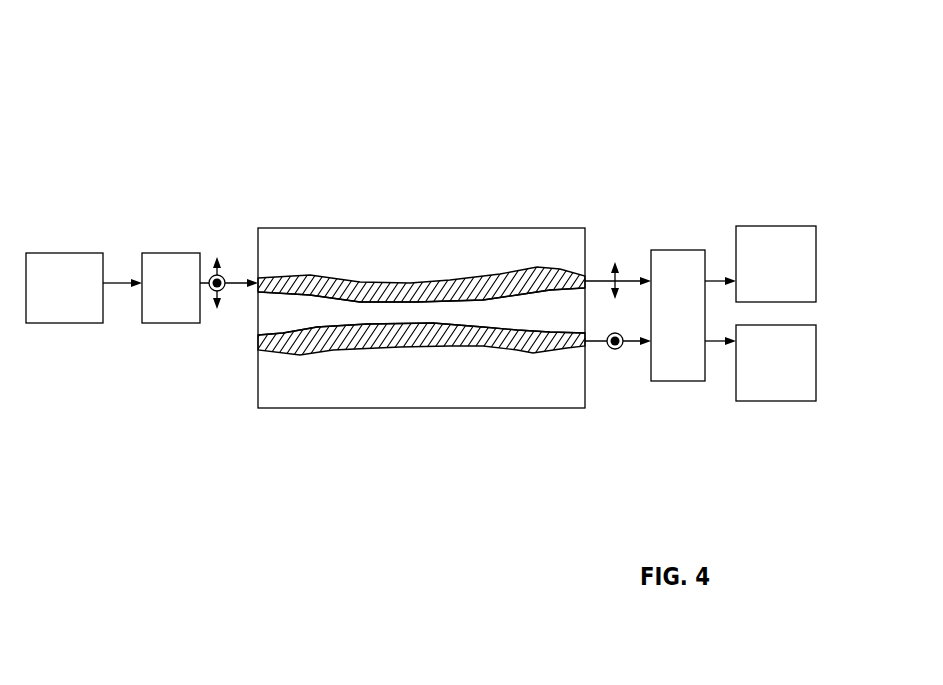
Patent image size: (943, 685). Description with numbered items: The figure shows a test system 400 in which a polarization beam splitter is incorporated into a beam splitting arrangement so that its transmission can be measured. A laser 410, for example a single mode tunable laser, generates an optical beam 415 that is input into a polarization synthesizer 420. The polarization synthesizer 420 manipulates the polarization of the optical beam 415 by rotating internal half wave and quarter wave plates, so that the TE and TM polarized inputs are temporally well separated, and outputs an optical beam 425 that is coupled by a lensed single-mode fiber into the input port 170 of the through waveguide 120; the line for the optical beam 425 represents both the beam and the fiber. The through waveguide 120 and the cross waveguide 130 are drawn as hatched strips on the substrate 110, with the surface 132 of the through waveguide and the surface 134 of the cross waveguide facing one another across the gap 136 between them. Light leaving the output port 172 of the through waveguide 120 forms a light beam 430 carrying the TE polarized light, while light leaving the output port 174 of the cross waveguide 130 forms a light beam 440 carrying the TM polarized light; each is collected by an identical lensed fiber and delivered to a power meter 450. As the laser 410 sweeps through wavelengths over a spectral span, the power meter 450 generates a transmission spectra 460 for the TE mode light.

The test system 400 is at (657, 56).
The laser 410 is at (64, 288).
The optical beam 415 is at (118, 283).
The polarization synthesizer 420 is at (171, 288).
The input port 170 is at (256, 281).
The optical beam 425 is at (242, 283).
The substrate 110 is at (412, 228).
The through waveguide 120 is at (292, 275).
The cross waveguide 130 is at (292, 354).
The first waveguide surface 132 is at (370, 302).
The second waveguide surface 134 is at (482, 313).
The gap between waveguides 136 is at (422, 314).
The output port 172 is at (587, 280).
The output port 174 is at (587, 343).
The light beam 430 is at (625, 278).
The light beam 440 is at (628, 343).
The power meter 450 is at (733, 303).
The transmission spectra 460 is at (760, 363).